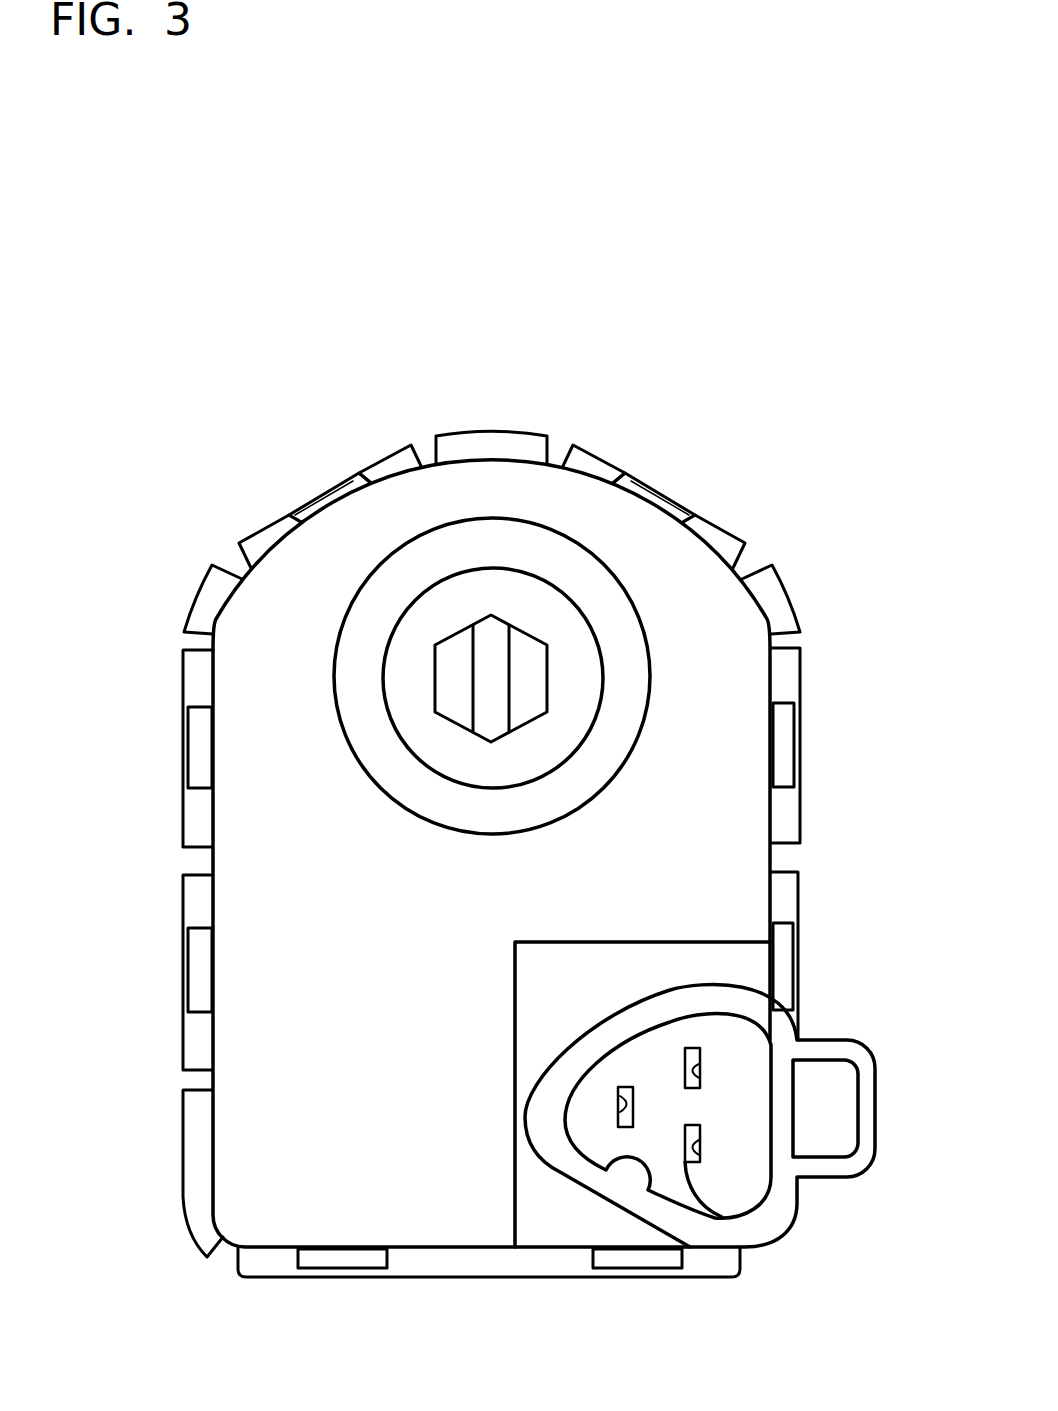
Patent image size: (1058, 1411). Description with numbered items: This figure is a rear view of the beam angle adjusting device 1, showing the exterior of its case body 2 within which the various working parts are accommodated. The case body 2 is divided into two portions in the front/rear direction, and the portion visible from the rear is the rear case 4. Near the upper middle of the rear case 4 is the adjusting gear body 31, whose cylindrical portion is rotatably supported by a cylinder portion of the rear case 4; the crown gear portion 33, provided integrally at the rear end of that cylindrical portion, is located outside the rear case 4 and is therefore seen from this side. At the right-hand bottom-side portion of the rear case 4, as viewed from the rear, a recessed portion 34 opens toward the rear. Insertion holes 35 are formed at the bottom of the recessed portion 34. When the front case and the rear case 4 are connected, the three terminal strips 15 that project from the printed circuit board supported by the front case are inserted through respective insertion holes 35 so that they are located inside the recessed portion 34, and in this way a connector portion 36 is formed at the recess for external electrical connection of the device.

The beam angle adjusting device 1 is at (630, 375).
The case body 2 is at (482, 478).
The rear case 4 is at (233, 750).
The terminal strips 15 is at (628, 1087).
The adjusting gear body 31 is at (630, 718).
The crown gear portion 33 is at (428, 797).
The recessed portion 34 is at (648, 1190).
The insertion holes 35 is at (700, 1069).
The connector portion 36 is at (638, 1015).